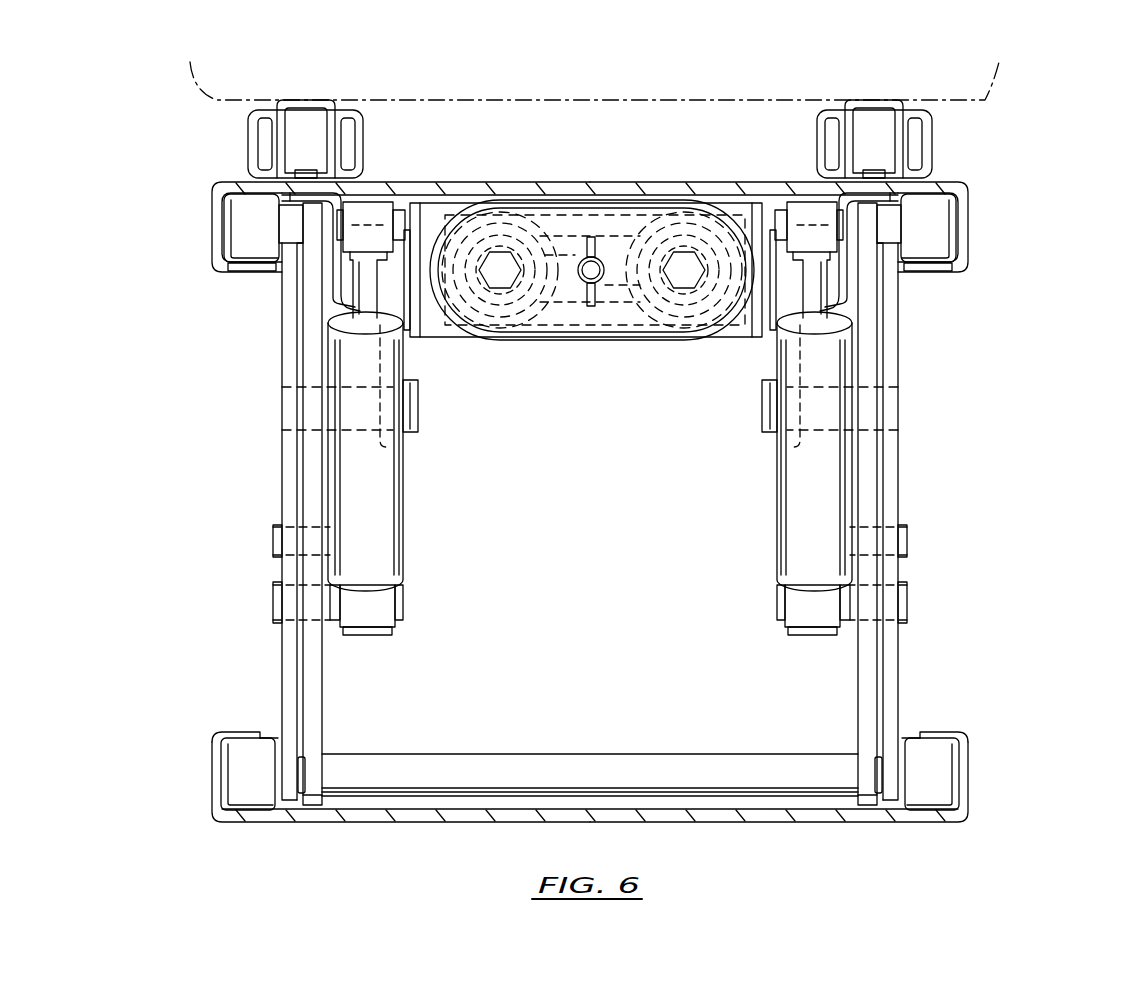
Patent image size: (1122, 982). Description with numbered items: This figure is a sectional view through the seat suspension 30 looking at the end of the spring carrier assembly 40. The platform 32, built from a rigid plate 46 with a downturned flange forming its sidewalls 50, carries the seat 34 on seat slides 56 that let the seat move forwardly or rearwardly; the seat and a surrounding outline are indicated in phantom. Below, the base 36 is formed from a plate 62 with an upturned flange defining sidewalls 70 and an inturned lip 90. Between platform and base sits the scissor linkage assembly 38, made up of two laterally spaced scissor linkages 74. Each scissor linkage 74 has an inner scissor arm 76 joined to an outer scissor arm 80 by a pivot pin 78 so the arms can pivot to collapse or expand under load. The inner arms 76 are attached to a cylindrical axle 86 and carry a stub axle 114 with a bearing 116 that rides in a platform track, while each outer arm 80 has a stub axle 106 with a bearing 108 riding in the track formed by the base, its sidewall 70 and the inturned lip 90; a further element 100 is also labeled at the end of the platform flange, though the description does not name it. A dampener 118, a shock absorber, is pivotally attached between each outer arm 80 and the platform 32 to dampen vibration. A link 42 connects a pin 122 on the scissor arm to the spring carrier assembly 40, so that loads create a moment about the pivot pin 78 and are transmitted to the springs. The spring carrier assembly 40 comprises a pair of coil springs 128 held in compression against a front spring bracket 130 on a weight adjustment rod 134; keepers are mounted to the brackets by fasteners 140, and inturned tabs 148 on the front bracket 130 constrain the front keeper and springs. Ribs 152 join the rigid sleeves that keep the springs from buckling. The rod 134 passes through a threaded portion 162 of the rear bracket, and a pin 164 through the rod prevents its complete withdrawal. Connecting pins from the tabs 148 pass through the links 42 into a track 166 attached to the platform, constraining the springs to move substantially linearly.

The seat suspension 30 is at (236, 595).
The platform 32 is at (970, 187).
The seat 34 is at (1008, 74).
The base 36 is at (531, 826).
The scissor linkage assembly 38 is at (963, 489).
The spring carrier assembly 40 is at (567, 380).
The link 42 is at (392, 446).
The plate 46 is at (450, 184).
The sidewalls 50 is at (220, 224).
The seat slides 56 is at (248, 134).
The plate 62 is at (651, 825).
The sidewalls 70 is at (213, 765).
The scissor linkage 74 is at (280, 658).
The inner scissor arm 76 is at (324, 686).
The pivot pin 78 is at (272, 545).
The outer scissor arm 80 is at (282, 478).
The axle 86 is at (630, 760).
The inturned lip 90 is at (246, 732).
The upper lip 100 is at (242, 275).
The stub axle 106 is at (306, 776).
The bearing 108 is at (251, 795).
The stub axle 114 is at (291, 234).
The bearing 116 is at (233, 245).
The dampener 118 is at (380, 518).
The pin 122 is at (420, 414).
The springs 128 is at (464, 335).
The front spring bracket 130 is at (742, 208).
The weight adjustment rod 134 is at (593, 266).
The fasteners 140 is at (498, 262).
The inturned tabs 148 is at (416, 206).
The ribs 152 is at (576, 212).
The threaded portion 162 is at (486, 333).
The pin 164 is at (591, 292).
The track 166 is at (336, 312).